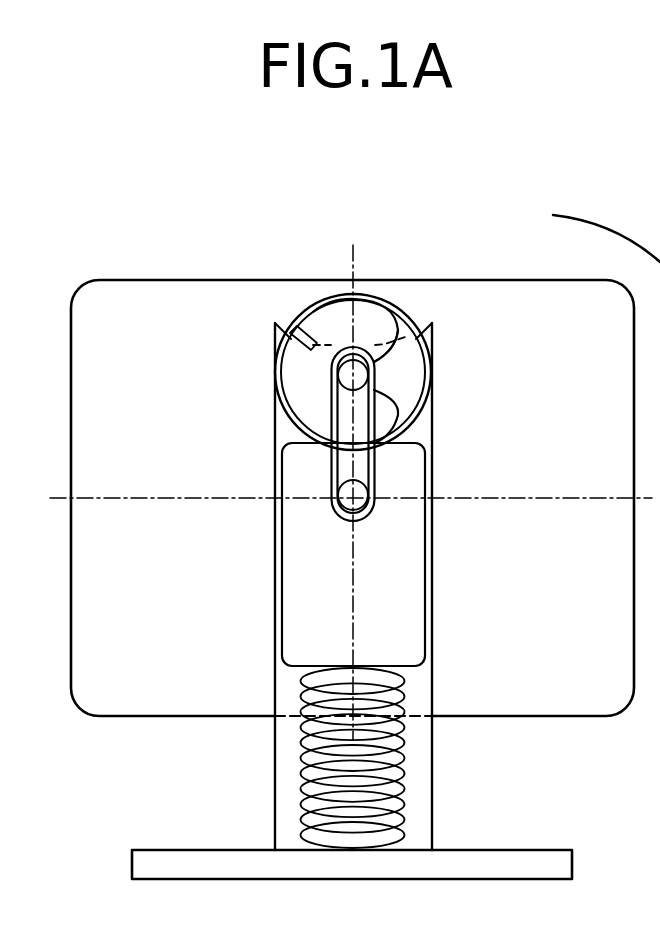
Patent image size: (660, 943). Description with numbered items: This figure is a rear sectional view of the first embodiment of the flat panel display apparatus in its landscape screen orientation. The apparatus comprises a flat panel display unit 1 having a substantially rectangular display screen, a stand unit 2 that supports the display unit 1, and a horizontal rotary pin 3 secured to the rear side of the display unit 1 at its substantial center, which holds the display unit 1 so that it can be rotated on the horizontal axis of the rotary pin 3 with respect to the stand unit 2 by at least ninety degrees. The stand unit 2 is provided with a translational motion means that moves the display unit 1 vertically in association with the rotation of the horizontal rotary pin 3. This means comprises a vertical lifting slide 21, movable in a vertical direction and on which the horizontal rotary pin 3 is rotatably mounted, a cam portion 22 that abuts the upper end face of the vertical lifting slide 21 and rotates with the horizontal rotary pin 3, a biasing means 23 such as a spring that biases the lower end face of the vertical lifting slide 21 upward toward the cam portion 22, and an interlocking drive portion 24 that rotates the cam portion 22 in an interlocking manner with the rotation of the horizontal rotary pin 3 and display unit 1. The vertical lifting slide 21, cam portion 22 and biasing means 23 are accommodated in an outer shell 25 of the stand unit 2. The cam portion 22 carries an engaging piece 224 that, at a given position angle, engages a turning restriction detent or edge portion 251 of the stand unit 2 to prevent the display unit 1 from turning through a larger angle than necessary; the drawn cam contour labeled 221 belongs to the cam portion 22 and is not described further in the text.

The flat panel display unit 1 is at (138, 290).
The stand unit 2 is at (545, 850).
The horizontal rotary pin 3 is at (335, 505).
The vertical lifting slide 21 is at (290, 590).
The cam portion 22 is at (397, 320).
The biasing means 23 is at (300, 768).
The interlocking drive portion 24 is at (318, 428).
The outer shell 25 is at (432, 760).
The cam portion 221 is at (388, 425).
The engaging piece 224 is at (312, 310).
The turning restriction detent or edge portion 251 is at (291, 338).